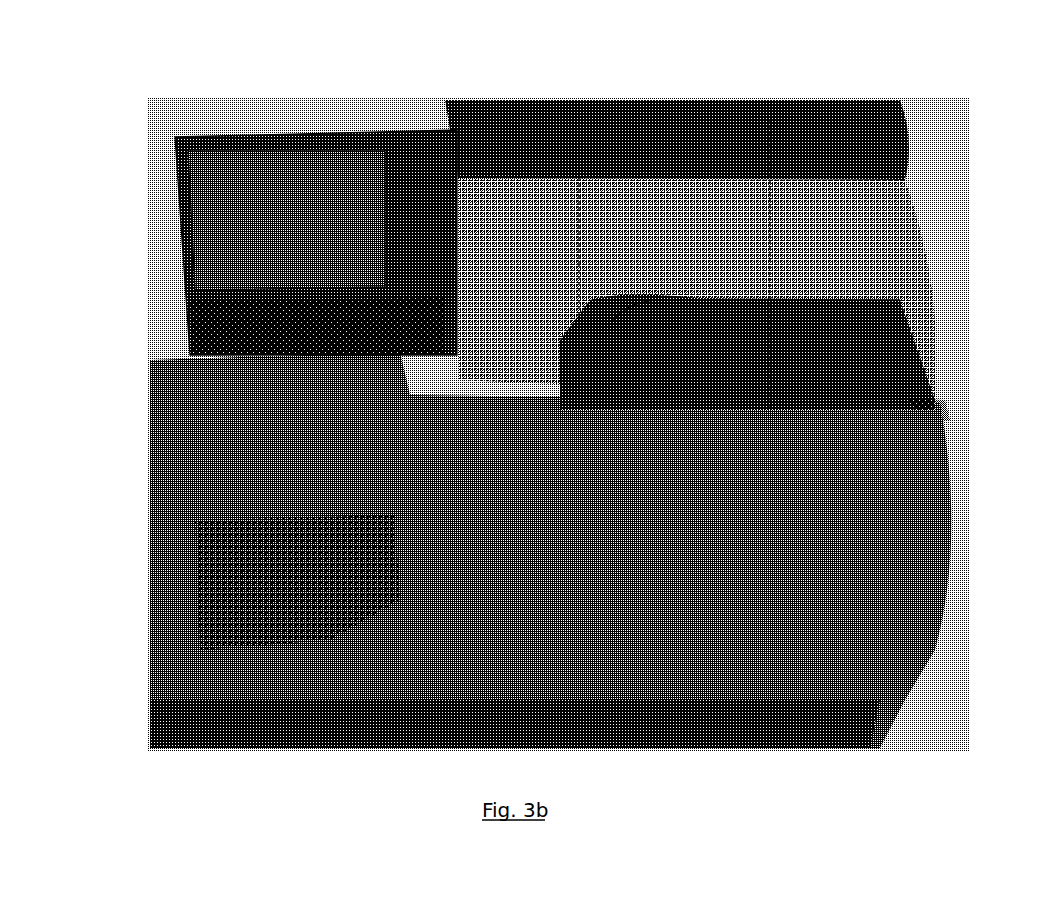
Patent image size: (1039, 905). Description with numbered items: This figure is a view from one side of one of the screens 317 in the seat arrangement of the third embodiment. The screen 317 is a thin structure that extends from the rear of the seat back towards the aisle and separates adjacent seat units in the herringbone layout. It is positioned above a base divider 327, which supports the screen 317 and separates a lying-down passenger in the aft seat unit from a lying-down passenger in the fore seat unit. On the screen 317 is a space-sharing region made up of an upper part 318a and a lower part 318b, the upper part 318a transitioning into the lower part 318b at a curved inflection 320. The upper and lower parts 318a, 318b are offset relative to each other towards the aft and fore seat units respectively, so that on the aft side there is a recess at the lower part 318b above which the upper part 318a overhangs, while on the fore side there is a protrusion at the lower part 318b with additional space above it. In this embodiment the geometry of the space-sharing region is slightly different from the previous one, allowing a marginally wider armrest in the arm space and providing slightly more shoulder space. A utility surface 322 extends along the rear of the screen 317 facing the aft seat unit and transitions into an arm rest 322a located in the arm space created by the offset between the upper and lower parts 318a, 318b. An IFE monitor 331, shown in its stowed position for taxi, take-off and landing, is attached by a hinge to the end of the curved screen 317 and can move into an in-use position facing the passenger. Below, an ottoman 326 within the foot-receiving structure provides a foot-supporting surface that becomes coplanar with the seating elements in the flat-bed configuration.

The screen 317 is at (822, 260).
The upper part of the space-sharing region 318a is at (705, 251).
The lower part of the space-sharing region 318b is at (705, 361).
The curved inflection 320 is at (632, 318).
The utility surface 322 is at (928, 405).
The arm rest 322a is at (700, 408).
The ottoman 326 is at (192, 523).
The base divider 327 is at (790, 545).
The IFE monitor 331 is at (345, 128).